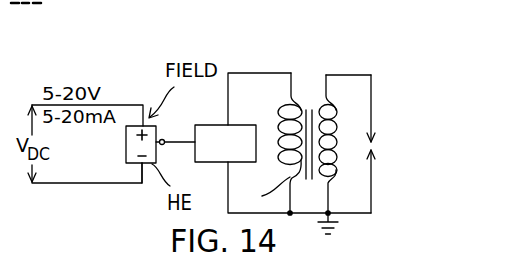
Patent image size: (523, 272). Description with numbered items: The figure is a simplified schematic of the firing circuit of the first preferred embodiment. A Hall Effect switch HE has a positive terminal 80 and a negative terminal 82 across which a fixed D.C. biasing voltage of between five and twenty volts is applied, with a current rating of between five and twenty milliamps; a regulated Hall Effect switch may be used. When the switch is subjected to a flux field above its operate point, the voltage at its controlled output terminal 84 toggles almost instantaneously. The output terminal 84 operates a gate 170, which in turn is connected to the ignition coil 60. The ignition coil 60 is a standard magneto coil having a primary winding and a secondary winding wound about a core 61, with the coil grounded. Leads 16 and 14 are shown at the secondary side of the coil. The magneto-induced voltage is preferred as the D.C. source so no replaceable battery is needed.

The positive terminal 80 is at (141, 126).
The negative terminal 82 is at (141, 165).
The controlled output terminal 84 is at (164, 139).
The gate 170 is at (237, 125).
The ignition coil 60 is at (304, 131).
The core 61 is at (305, 159).
The conductor 16 is at (371, 115).
The conductor 14 is at (372, 152).